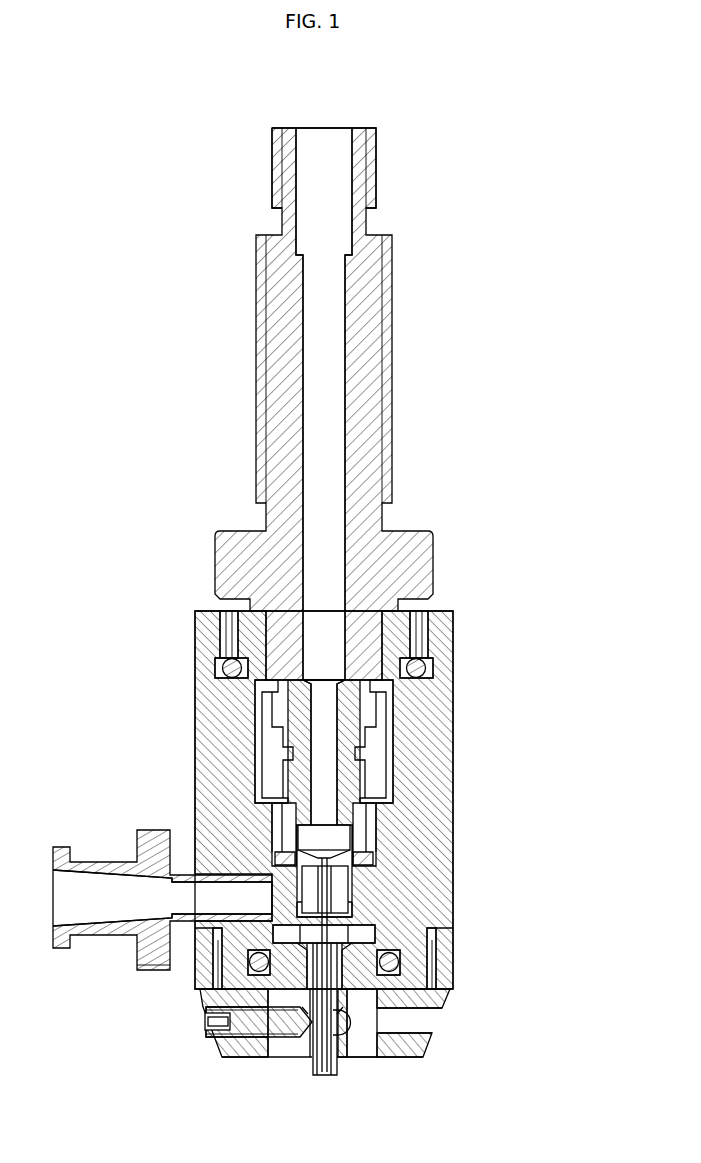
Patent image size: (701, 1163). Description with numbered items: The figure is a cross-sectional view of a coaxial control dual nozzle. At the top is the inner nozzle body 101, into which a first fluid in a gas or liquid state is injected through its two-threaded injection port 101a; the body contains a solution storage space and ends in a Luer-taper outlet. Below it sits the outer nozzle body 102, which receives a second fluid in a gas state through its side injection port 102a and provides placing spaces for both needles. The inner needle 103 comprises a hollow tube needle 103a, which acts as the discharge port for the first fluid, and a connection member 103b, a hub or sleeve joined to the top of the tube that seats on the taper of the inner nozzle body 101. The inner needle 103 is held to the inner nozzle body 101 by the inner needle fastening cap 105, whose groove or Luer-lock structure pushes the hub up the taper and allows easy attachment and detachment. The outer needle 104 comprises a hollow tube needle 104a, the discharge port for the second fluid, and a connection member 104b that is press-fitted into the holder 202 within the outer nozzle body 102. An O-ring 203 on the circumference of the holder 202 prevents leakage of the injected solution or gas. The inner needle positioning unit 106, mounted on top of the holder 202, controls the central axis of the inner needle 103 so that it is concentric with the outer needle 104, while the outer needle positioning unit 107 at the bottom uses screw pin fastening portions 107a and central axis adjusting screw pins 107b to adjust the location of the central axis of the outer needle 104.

The inner nozzle body 101 is at (404, 403).
The injection port 101a is at (325, 128).
The outer nozzle body 102 is at (459, 768).
The injection port 102a is at (141, 817).
The inner needle 103 is at (440, 871).
The hollow tube needle 103a is at (349, 916).
The connection member 103b is at (340, 887).
The outer needle 104 is at (354, 1027).
The hollow tube needle 104a is at (333, 1067).
The connection member 104b is at (388, 988).
The inner needle fastening cap 105 is at (377, 725).
The inner needle positioning unit 106 is at (349, 933).
The outer needle positioning unit 107 is at (318, 1041).
The screw pin fastening portion 107a is at (403, 1025).
The central axis adjusting screw pin 107b is at (262, 1021).
The holder 202 is at (358, 964).
The O-ring 203 is at (258, 962).